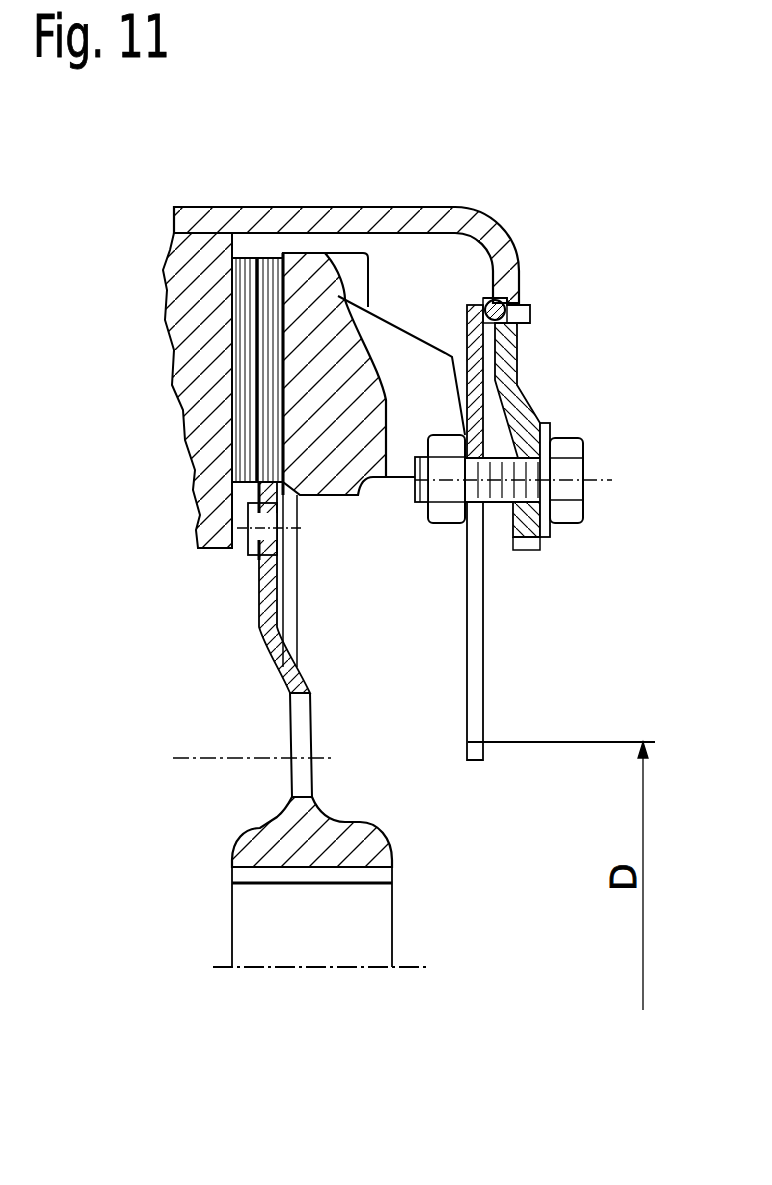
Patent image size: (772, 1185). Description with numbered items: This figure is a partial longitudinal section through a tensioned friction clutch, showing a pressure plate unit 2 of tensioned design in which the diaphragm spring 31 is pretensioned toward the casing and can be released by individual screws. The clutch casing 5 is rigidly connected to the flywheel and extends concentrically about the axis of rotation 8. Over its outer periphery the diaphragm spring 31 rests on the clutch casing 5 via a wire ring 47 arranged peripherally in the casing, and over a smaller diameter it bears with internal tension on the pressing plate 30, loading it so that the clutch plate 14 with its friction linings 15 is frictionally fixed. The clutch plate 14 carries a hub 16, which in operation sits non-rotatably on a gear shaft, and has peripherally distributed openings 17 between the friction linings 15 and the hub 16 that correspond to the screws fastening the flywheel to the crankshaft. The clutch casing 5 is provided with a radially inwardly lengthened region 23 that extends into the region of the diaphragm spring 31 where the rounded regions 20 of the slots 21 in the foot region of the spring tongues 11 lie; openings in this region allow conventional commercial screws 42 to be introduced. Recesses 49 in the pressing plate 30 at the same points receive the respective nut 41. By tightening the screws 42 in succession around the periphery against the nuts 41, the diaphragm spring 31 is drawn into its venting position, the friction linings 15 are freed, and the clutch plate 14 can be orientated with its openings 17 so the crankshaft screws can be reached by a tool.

The pressure plate unit 2 is at (550, 177).
The clutch casing 5 is at (413, 213).
The axis of rotation 8 is at (217, 968).
The spring tongues 11 is at (477, 710).
The clutch plate 14 is at (272, 623).
The friction linings 15 is at (270, 257).
The hub 16 is at (253, 840).
The openings 17 is at (297, 707).
The rounded regions 20 is at (530, 426).
The slots 21 is at (485, 648).
The radially inwardly lengthened region 23 is at (530, 522).
The pressing plate 30 is at (315, 268).
The diaphragm spring 31 is at (520, 395).
The nut 41 is at (445, 515).
The screws 42 is at (545, 490).
The wire ring 47 is at (530, 298).
The recesses 49 is at (402, 422).